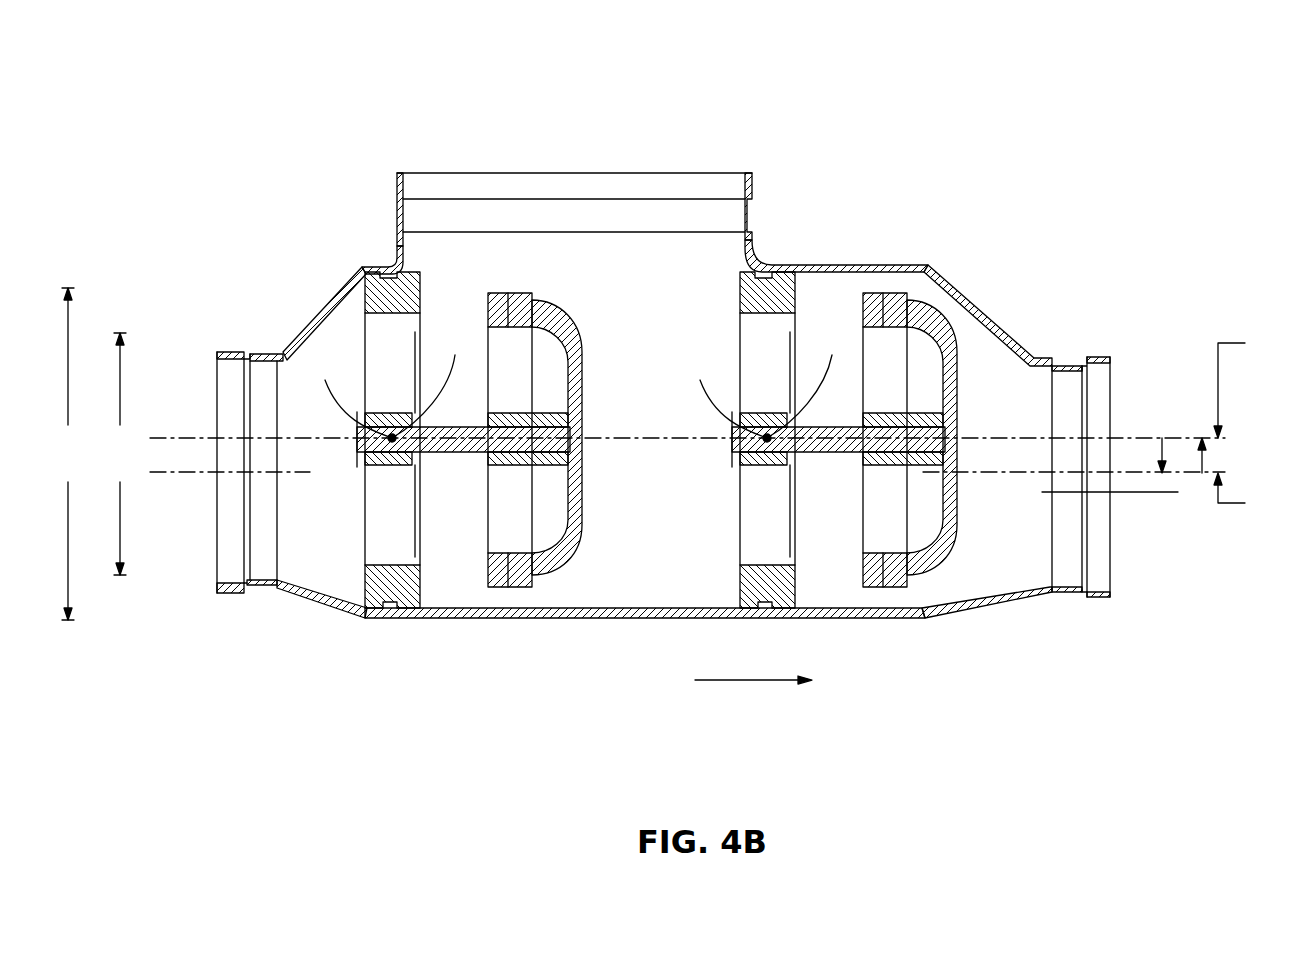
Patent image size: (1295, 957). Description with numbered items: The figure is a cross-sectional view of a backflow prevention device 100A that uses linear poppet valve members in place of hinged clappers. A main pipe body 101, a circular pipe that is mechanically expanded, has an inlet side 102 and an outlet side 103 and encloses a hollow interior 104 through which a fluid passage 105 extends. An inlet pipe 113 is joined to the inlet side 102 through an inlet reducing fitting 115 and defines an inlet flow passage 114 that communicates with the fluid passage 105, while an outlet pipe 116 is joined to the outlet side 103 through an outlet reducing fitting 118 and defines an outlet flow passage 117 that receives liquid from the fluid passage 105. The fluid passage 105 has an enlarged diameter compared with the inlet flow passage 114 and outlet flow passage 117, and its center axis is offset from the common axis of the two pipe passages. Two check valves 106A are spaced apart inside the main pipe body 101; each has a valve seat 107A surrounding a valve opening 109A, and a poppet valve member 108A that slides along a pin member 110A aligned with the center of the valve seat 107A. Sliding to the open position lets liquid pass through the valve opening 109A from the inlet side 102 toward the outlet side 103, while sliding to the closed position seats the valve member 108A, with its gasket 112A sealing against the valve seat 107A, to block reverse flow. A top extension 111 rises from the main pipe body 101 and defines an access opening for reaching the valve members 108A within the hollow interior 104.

The backflow prevention device 100A is at (355, 105).
The main pipe body 101 is at (857, 262).
The inlet side 102 is at (284, 350).
The outlet side 103 is at (1037, 358).
The hollow interior 104 is at (980, 326).
The fluid passage 105 is at (970, 573).
The check valve 106A is at (373, 292).
The valve seat 107A is at (378, 590).
The valve member 108A is at (550, 560).
The valve opening 109A is at (383, 540).
The pin member 110A is at (466, 452).
The top extension 111 is at (753, 187).
The gasket 112A is at (493, 310).
The inlet pipe 113 is at (232, 348).
The inlet flow passage 114 is at (245, 562).
The inlet reducing fitting 115 is at (258, 592).
The outlet pipe 116 is at (1097, 350).
The outlet flow passage 117 is at (1080, 558).
The outlet reducing fitting 118 is at (1063, 590).